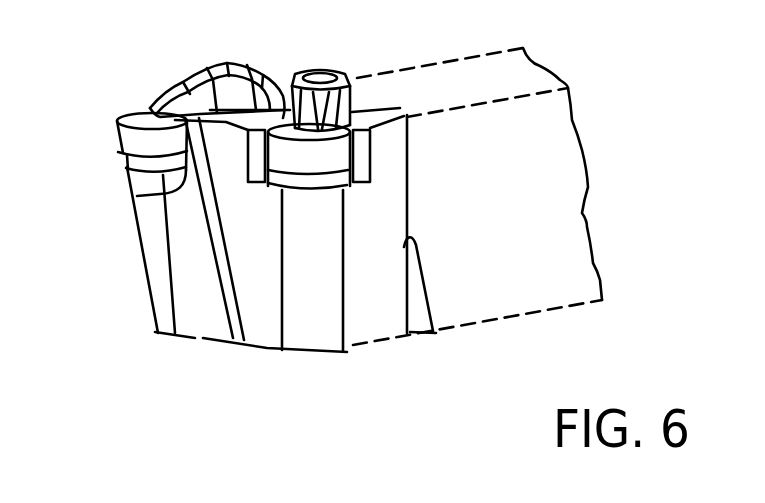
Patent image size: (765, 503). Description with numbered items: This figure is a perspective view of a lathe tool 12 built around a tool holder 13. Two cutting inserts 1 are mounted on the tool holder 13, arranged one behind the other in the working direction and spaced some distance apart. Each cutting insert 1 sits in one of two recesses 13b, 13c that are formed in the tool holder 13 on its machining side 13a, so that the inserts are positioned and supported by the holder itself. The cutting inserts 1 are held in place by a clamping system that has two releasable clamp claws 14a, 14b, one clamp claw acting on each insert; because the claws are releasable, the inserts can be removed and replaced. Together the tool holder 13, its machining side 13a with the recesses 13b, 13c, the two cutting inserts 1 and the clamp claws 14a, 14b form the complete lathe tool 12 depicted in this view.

The cutting insert 1 is at (120, 142).
The lathe tool 12 is at (547, 65).
The tool holder 13 is at (367, 295).
The machining side 13a is at (173, 243).
The recess 13b is at (185, 180).
The recess 13c is at (407, 115).
The clamp claw 14a is at (240, 80).
The clamp claw 14b is at (350, 78).